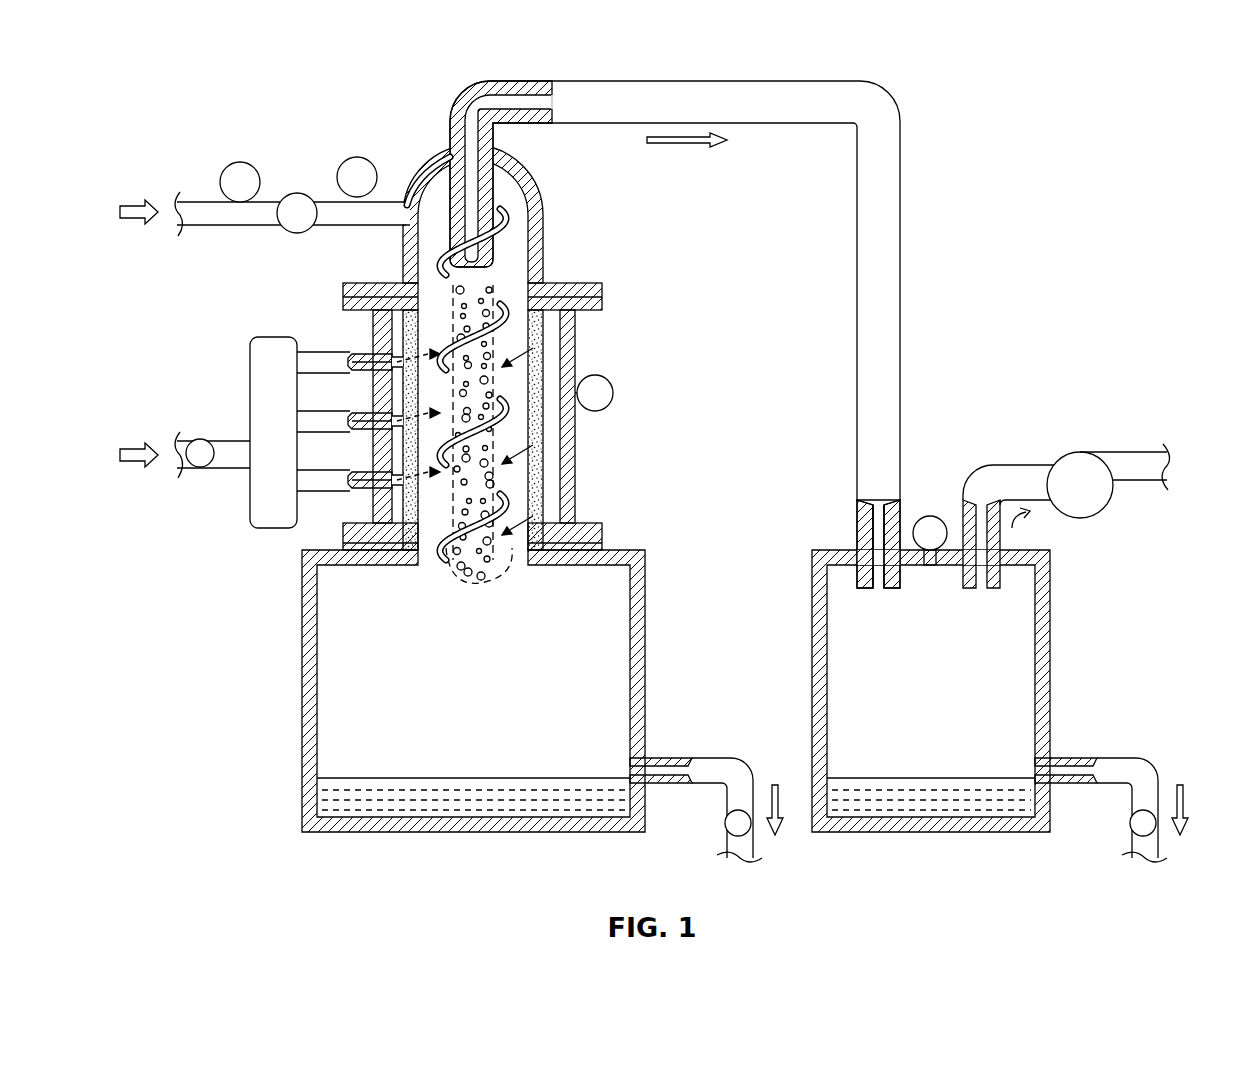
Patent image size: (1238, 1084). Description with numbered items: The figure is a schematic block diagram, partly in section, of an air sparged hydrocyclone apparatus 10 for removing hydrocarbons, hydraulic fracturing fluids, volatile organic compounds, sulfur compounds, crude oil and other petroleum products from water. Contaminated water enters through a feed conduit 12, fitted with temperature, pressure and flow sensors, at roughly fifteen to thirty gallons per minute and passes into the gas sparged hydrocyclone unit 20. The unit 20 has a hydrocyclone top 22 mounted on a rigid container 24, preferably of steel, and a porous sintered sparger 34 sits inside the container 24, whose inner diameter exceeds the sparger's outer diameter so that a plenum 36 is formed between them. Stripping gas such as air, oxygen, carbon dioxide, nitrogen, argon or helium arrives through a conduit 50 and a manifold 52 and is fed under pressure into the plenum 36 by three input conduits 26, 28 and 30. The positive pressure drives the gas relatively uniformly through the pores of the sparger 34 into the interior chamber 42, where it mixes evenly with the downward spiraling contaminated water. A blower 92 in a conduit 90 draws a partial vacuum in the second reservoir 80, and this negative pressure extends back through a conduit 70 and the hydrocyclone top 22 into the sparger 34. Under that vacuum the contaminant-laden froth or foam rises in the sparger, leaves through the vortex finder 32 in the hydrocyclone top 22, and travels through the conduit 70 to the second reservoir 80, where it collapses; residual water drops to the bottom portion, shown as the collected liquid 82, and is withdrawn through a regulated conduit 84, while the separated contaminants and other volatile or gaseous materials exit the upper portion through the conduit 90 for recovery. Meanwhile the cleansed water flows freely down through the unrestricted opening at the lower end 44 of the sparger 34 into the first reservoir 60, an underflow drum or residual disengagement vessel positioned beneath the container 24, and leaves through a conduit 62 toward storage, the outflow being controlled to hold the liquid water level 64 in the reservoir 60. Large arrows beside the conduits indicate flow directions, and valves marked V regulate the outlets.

The apparatus 10 is at (1046, 146).
The feed conduit 12 is at (200, 200).
The gas sparged hydrocyclone unit 20 is at (541, 176).
The hydrocyclone top 22 is at (539, 258).
The rigid container 24 is at (572, 362).
The input conduit 26 is at (360, 355).
The input conduit 28 is at (360, 414).
The input conduit 30 is at (360, 473).
The vortex finder 32 is at (455, 175).
The sparger 34 is at (549, 455).
The plenum 36 is at (566, 432).
The chamber 42 is at (519, 507).
The lower end 44 is at (500, 576).
The conduit 50 is at (222, 440).
The manifold 52 is at (250, 365).
The first reservoir 60 is at (646, 632).
The conduit 62 is at (726, 758).
The liquid water level 64 is at (415, 778).
The conduit 70 is at (452, 130).
The second reservoir 80 is at (1051, 632).
The collected liquid 82 is at (962, 778).
The regulated conduit 84 is at (1131, 758).
The conduit 90 is at (1010, 465).
The blower 92 is at (1085, 452).